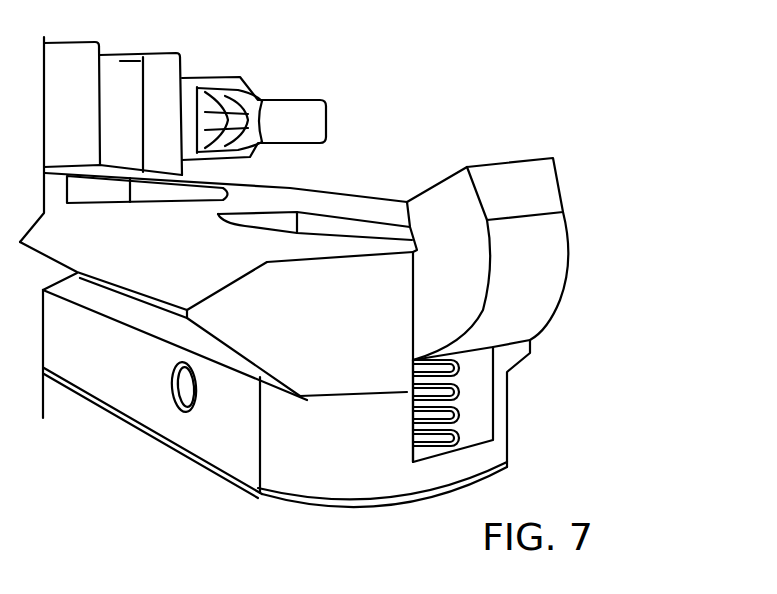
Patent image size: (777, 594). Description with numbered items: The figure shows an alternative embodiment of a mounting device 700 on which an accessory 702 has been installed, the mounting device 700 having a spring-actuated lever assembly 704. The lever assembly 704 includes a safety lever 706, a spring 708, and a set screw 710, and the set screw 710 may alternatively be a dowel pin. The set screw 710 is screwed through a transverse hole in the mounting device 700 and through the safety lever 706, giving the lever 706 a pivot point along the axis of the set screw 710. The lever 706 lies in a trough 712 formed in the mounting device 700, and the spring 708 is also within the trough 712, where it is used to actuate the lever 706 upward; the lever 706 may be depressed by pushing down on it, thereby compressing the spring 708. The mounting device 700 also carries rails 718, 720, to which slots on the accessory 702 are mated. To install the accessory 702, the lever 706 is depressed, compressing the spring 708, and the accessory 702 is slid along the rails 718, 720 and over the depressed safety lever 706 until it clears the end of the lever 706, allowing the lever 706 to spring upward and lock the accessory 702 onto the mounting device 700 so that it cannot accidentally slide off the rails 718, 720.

The mounting device 700 is at (557, 115).
The accessory 702 is at (155, 33).
The spring-actuated lever assembly 704 is at (653, 155).
The safety lever 706 is at (540, 237).
The spring 708 is at (453, 397).
The set screw 710 is at (197, 398).
The trough 712 is at (353, 228).
The rail 718 is at (160, 305).
The rail 720 is at (328, 182).